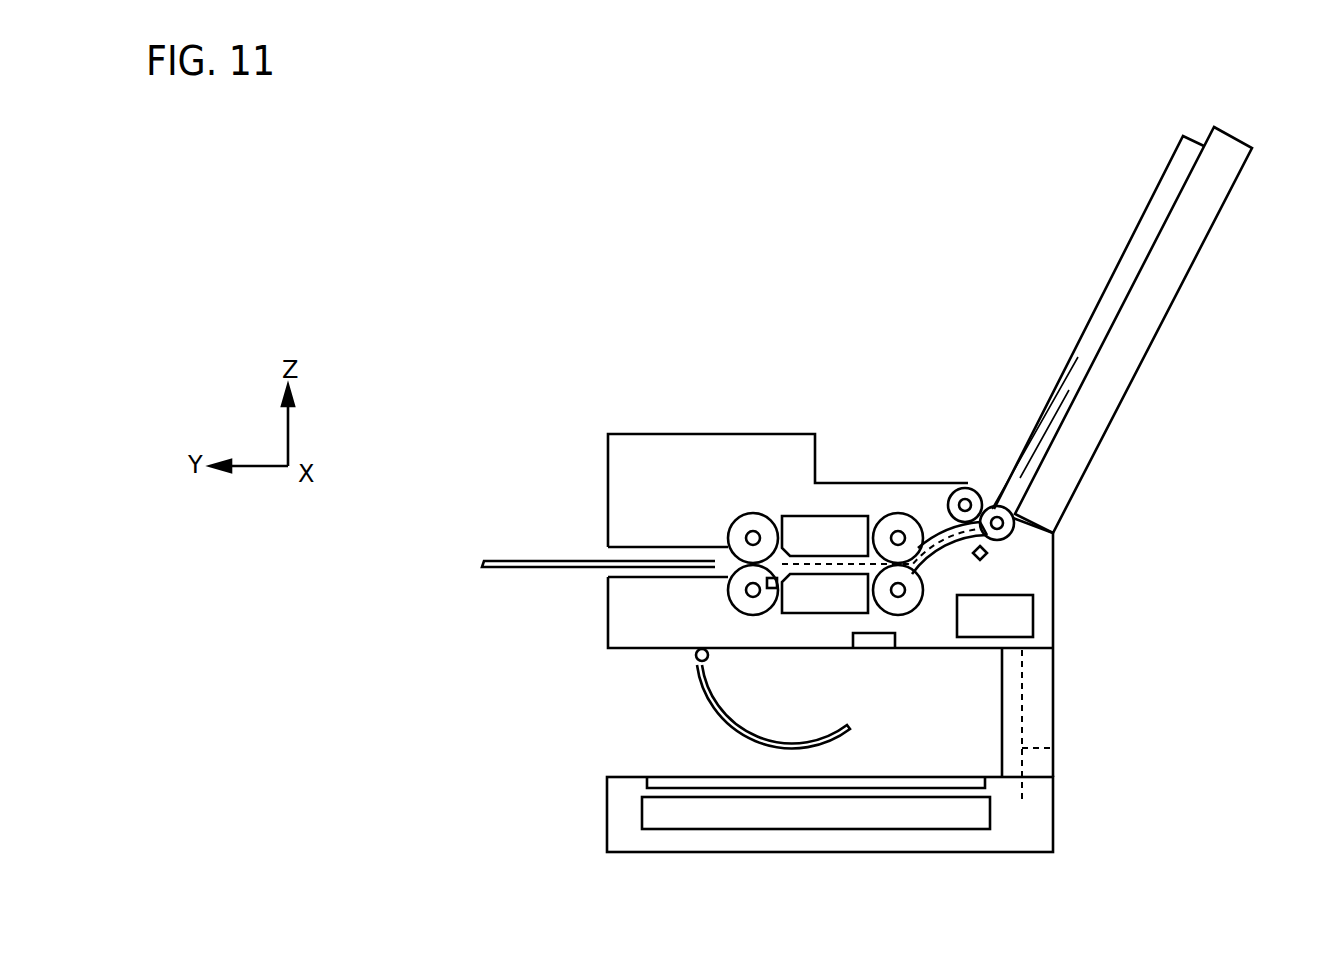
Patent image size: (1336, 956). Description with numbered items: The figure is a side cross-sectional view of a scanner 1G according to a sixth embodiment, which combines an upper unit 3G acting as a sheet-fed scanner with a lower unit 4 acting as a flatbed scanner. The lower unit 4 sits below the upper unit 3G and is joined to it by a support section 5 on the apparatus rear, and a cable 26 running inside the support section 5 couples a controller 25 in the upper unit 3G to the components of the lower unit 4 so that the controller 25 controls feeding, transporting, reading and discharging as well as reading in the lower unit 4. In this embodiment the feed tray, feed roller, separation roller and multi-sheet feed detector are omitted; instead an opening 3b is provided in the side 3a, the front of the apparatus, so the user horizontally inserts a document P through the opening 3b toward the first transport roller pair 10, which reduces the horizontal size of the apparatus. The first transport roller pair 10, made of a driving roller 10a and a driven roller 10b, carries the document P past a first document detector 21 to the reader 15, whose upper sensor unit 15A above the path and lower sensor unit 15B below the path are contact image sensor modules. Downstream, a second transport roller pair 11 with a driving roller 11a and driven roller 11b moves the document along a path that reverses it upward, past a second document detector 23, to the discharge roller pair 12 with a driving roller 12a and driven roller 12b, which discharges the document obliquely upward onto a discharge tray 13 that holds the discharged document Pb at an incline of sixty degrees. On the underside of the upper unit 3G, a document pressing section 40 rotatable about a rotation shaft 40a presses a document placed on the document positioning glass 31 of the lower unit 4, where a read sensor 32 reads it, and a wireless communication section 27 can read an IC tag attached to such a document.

The scanner 1G is at (544, 185).
The document Pb is at (1100, 294).
The discharge tray 13 is at (1112, 420).
The discharge roller pair 12 is at (972, 472).
The driving roller 12a is at (1015, 532).
The driven roller 12b is at (961, 488).
The second transport roller pair 11 is at (941, 606).
The driving roller 11a is at (893, 612).
The driven roller 11b is at (901, 513).
The first transport roller pair 10 is at (712, 597).
The driving roller 10a is at (733, 604).
The driven roller 10b is at (755, 513).
The reader 15 is at (809, 498).
The upper sensor unit 15A is at (832, 530).
The lower sensor unit 15B is at (825, 600).
The first document detector 21 is at (771, 597).
The wireless communication section 27 is at (877, 640).
The second document detector 23 is at (990, 558).
The upper unit 3G is at (1022, 620).
The controller 25 is at (1055, 616).
The support section 5 is at (1053, 715).
The cable 26 is at (1053, 748).
The lower unit 4 is at (1053, 812).
The side 3a is at (607, 483).
The opening 3b is at (594, 551).
The document P is at (512, 557).
The document pressing section 40 is at (712, 707).
The rotation shaft 40a is at (697, 660).
The document positioning glass 31 is at (845, 787).
The read sensor 32 is at (768, 815).